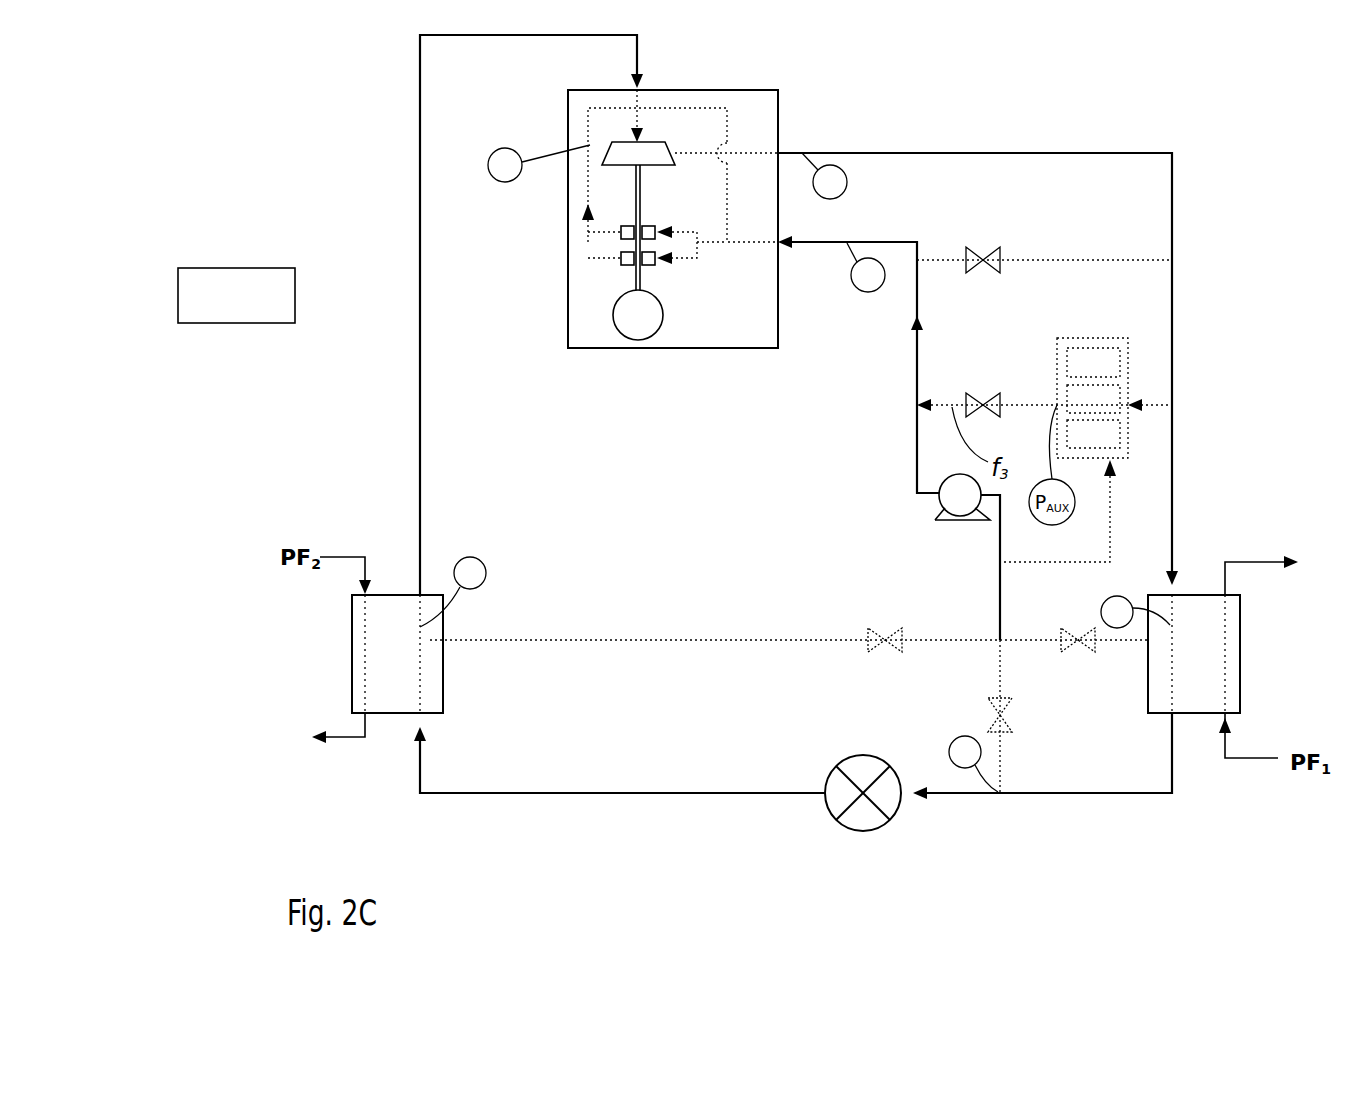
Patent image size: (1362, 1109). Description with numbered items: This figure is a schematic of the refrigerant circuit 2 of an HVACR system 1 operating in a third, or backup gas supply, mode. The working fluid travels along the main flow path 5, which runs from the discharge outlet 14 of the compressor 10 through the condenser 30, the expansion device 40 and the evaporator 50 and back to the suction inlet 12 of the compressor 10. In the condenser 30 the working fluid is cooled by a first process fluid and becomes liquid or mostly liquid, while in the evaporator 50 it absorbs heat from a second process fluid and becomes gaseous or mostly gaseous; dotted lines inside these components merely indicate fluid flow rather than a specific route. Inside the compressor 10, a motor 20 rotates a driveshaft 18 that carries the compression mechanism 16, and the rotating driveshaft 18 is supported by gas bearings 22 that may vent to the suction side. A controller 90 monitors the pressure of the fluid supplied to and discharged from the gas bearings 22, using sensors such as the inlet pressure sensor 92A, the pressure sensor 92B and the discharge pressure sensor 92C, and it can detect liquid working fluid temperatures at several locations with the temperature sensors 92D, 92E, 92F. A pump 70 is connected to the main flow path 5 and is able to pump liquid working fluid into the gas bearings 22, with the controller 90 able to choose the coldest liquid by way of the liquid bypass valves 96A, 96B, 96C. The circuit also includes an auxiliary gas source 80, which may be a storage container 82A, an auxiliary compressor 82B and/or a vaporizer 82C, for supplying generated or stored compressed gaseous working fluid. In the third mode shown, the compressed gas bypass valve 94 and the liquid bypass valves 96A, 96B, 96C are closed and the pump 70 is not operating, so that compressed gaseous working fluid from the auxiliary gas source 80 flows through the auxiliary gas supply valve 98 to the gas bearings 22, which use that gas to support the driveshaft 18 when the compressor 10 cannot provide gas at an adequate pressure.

The HVACR system 1 is at (232, 103).
The refrigerant circuit 2 is at (1030, 140).
The main flow path 5 is at (420, 65).
The compressor 10 is at (585, 348).
The suction inlet 12 is at (640, 88).
The discharge outlet 14 is at (783, 153).
The compression mechanism 16 is at (665, 142).
The driveshaft 18 is at (634, 278).
The motor 20 is at (614, 322).
The gas bearings 22 is at (619, 234).
The condenser 30 is at (1240, 640).
The expansion device 40 is at (870, 831).
The evaporator 50 is at (352, 680).
The pump 70 is at (960, 522).
The auxiliary gas source 80 is at (1082, 425).
The storage container 82A is at (1115, 348).
The auxiliary compressor 82B is at (1067, 390).
The vaporizer 82C is at (1120, 430).
The controller 90 is at (265, 268).
The inlet pressure sensor 92A is at (505, 148).
The pressure sensor 92B is at (858, 290).
The discharge pressure sensor 92C is at (847, 182).
The temperature sensor 92D is at (1102, 606).
The temperature sensor 92E is at (950, 749).
The temperature sensor 92F is at (485, 567).
The compressed gas bypass valve 94 is at (998, 255).
The liquid bypass valve 96A is at (1087, 652).
The liquid bypass valve 96B is at (1010, 722).
The liquid bypass valve 96C is at (890, 652).
The auxiliary gas supply valve 98 is at (995, 398).